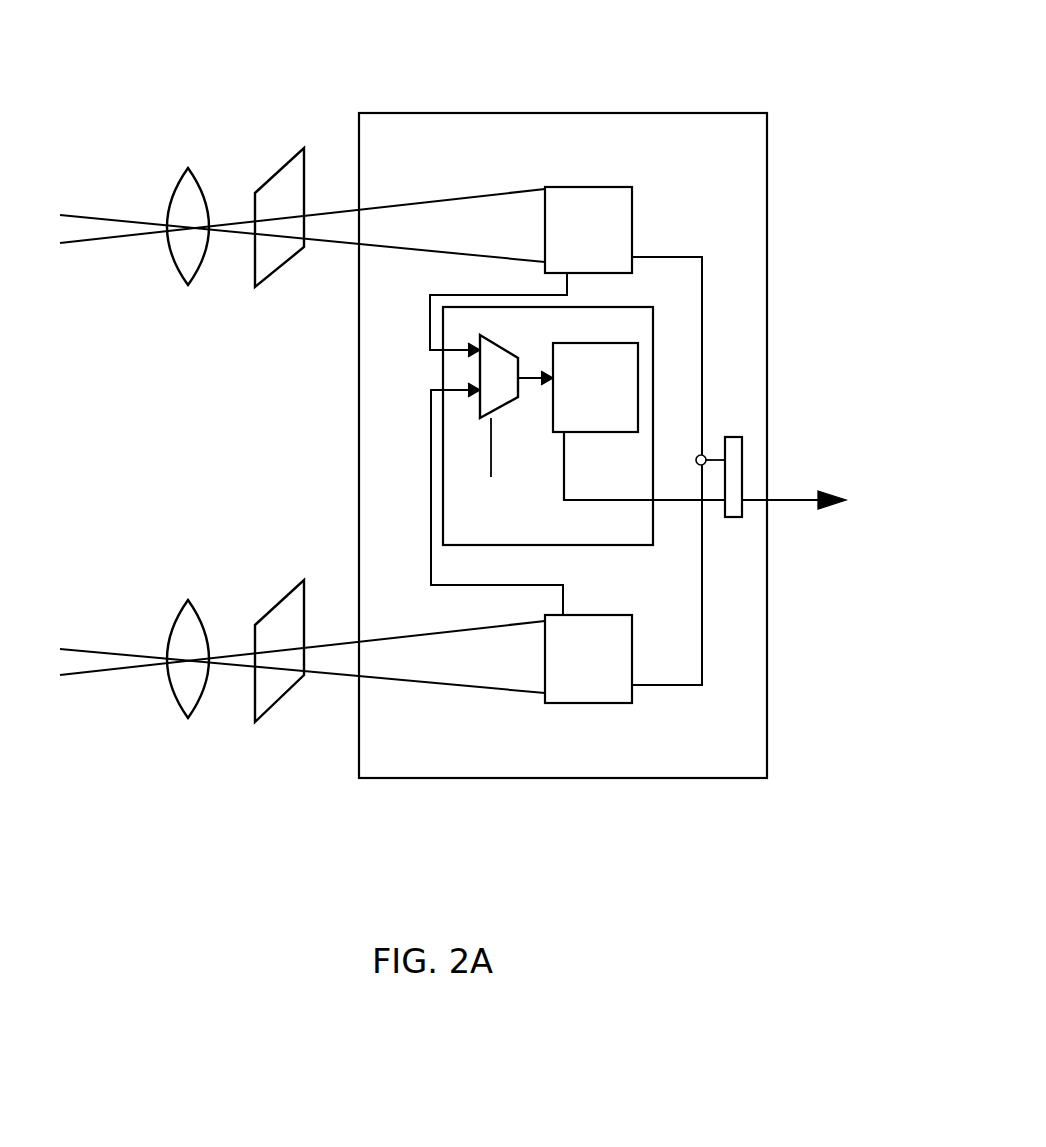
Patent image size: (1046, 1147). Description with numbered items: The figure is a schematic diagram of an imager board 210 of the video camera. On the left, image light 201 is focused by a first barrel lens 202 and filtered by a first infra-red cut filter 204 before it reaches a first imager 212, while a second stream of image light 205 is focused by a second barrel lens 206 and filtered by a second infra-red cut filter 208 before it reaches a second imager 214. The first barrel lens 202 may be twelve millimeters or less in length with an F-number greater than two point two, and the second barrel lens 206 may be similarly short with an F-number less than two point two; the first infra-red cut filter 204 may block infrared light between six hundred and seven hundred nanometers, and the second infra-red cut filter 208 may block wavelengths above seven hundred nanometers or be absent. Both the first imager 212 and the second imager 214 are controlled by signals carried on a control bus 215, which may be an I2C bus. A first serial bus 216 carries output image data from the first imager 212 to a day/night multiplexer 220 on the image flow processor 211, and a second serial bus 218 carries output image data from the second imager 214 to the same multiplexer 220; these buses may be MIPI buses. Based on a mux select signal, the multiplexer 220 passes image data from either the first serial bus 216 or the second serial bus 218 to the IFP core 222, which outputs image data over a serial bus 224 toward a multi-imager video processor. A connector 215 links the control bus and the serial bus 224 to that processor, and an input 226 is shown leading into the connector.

The image light 201 is at (295, 225).
The first barrel lens 202 is at (188, 138).
The first infra-red cut filter 204 is at (273, 147).
The image light 205 is at (290, 657).
The second barrel lens 206 is at (188, 732).
The second infra-red cut filter 208 is at (273, 725).
The imager board 210 is at (614, 445).
The image flow processor (IFP) 211 is at (657, 387).
The first imager (image sensor) 212 is at (648, 224).
The second imager (image sensor) 214 is at (648, 653).
The control bus / connector 215 is at (742, 460).
The first serial bus 216 is at (470, 315).
The second serial bus 218 is at (473, 499).
The day/night multiplexer 220 is at (516, 396).
The IFP core 222 is at (595, 387).
The serial bus 224 is at (727, 471).
The input to connector 226 is at (747, 515).